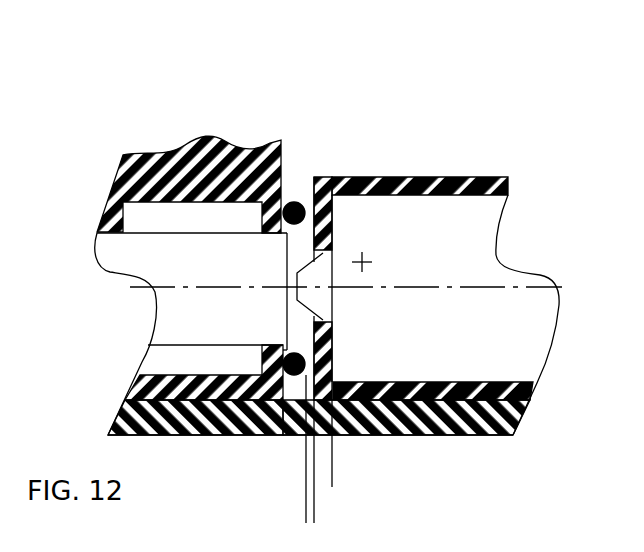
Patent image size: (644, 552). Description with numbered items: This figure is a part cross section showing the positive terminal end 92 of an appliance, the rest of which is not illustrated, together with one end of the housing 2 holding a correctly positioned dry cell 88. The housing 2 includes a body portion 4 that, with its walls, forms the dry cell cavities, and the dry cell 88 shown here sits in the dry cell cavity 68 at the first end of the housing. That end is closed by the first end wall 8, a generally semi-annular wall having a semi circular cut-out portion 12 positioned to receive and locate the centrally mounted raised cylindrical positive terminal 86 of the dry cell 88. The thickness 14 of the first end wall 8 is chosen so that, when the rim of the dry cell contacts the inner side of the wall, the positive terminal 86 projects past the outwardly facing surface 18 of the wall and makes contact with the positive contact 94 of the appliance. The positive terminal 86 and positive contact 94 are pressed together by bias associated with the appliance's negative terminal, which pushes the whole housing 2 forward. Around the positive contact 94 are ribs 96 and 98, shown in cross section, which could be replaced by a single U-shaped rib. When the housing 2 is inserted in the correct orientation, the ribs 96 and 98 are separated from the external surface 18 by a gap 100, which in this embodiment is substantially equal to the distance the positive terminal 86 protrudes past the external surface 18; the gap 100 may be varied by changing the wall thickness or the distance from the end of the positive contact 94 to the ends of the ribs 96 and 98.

The housing 2 is at (482, 112).
The body portion 4 is at (378, 177).
The first end wall 8 is at (328, 240).
The semi circular cut-out portion 12 is at (323, 318).
The thickness 14 is at (280, 475).
The outwardly facing surface 18 is at (307, 195).
The dry cell cavity 68 is at (504, 197).
The positive terminal 86 is at (328, 271).
The dry cell 88 is at (453, 213).
The positive terminal end 92 is at (248, 128).
The positive contact 94 is at (287, 302).
The rib 96 is at (291, 201).
The rib 98 is at (292, 418).
The gap 100 is at (280, 512).